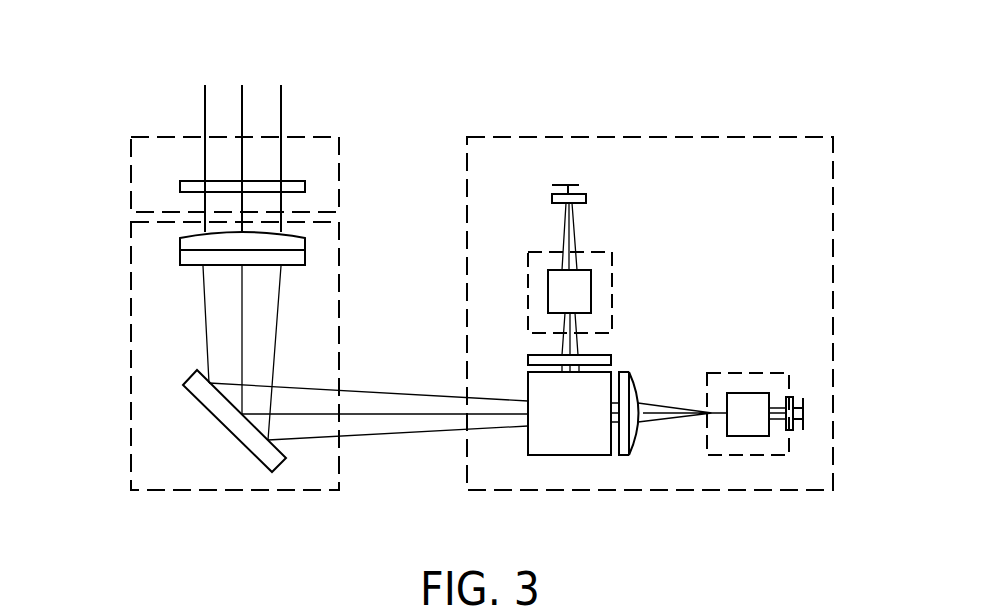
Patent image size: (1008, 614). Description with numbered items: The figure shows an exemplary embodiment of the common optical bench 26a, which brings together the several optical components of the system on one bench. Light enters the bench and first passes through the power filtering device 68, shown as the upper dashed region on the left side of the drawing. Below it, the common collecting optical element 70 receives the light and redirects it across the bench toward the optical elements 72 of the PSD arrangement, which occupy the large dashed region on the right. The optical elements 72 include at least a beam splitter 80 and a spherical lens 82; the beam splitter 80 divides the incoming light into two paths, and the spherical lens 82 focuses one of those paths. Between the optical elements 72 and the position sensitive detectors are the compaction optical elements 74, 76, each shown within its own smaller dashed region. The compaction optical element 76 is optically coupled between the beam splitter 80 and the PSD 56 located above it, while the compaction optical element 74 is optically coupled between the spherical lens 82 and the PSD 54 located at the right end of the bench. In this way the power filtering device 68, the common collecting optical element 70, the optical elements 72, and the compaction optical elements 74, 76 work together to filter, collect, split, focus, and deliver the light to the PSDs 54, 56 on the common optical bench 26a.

The common optical bench 26a is at (245, 67).
The power filtering device 68 is at (131, 173).
The common collecting optical element 70 is at (131, 332).
The optical elements of the PSD arrangement 72 is at (833, 313).
The PSD 56 is at (587, 198).
The compaction optical element 76 is at (575, 292).
The beam splitter 80 is at (540, 440).
The spherical lens 82 is at (637, 430).
The compaction optical element 74 is at (746, 406).
The PSD 54 is at (795, 430).